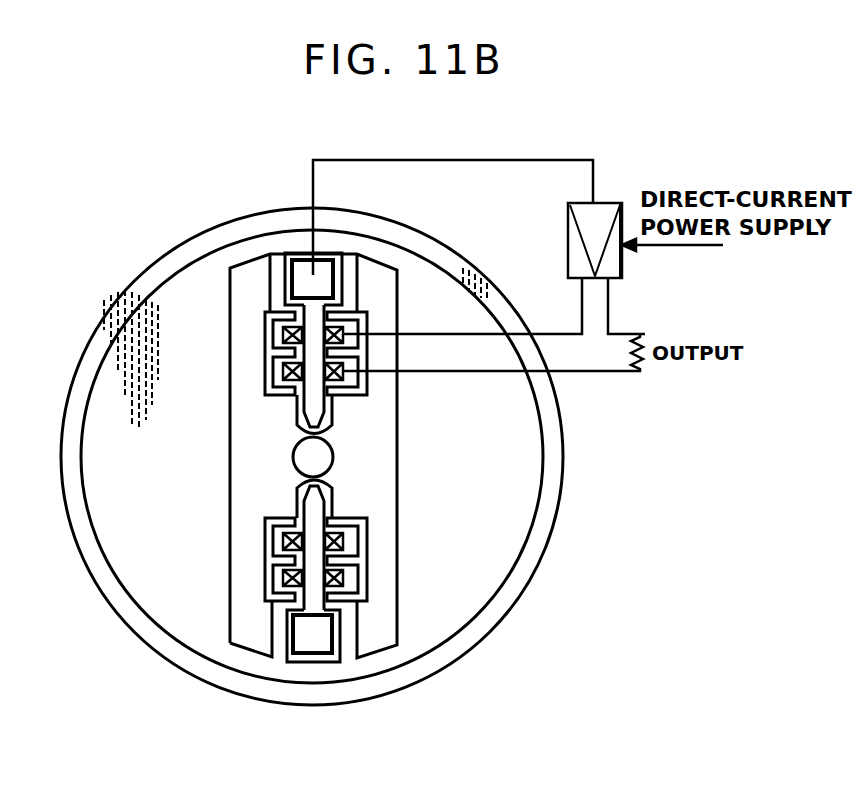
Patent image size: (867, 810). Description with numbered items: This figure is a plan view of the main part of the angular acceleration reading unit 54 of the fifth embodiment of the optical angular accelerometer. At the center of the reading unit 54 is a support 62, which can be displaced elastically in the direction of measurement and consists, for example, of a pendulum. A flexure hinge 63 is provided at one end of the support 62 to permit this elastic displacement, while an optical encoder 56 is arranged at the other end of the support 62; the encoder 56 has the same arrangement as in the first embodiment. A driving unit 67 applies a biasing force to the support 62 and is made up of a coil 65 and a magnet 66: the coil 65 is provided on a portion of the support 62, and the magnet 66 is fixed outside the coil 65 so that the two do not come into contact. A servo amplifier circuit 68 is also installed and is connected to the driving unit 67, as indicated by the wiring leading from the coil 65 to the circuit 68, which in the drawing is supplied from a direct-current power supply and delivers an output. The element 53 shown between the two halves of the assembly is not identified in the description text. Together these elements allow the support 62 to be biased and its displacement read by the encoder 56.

The ball 53 is at (328, 453).
The angular acceleration reading unit 54 is at (248, 273).
The optical encoder 56 is at (305, 267).
The support 62 is at (322, 510).
The flexure hinge 63 is at (328, 497).
The coil 65 is at (345, 580).
The magnet 66 is at (367, 547).
The driving unit 67 is at (386, 461).
The servo amplifier circuit 68 is at (605, 213).